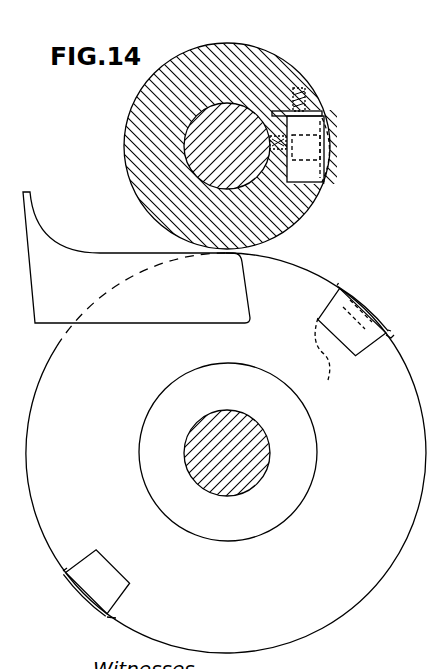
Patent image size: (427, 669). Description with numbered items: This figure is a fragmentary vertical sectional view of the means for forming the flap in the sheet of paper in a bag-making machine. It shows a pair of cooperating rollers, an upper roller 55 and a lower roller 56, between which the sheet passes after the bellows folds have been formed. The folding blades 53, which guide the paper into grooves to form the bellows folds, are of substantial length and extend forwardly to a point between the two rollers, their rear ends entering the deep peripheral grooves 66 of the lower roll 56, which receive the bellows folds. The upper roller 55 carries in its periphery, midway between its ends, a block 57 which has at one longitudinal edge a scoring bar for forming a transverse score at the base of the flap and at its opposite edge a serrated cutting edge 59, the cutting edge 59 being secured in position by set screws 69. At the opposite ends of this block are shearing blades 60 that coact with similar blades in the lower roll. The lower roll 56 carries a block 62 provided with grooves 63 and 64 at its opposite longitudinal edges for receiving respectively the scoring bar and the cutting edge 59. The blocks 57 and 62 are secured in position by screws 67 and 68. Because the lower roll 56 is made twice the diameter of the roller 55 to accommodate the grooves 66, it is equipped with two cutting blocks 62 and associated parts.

The roller 55 is at (258, 52).
The set screws 69 is at (308, 107).
The serrated cutting edge 59 is at (305, 113).
The screws 67 is at (328, 120).
The block 57 is at (327, 158).
The shearing blades 60 is at (315, 182).
The blades 53 is at (93, 258).
The roller 56 is at (305, 275).
The peripheral grooves 66 is at (246, 358).
The block 62 is at (355, 343).
The groove 63 is at (343, 290).
The groove 64 is at (388, 332).
The screws 68 is at (334, 355).